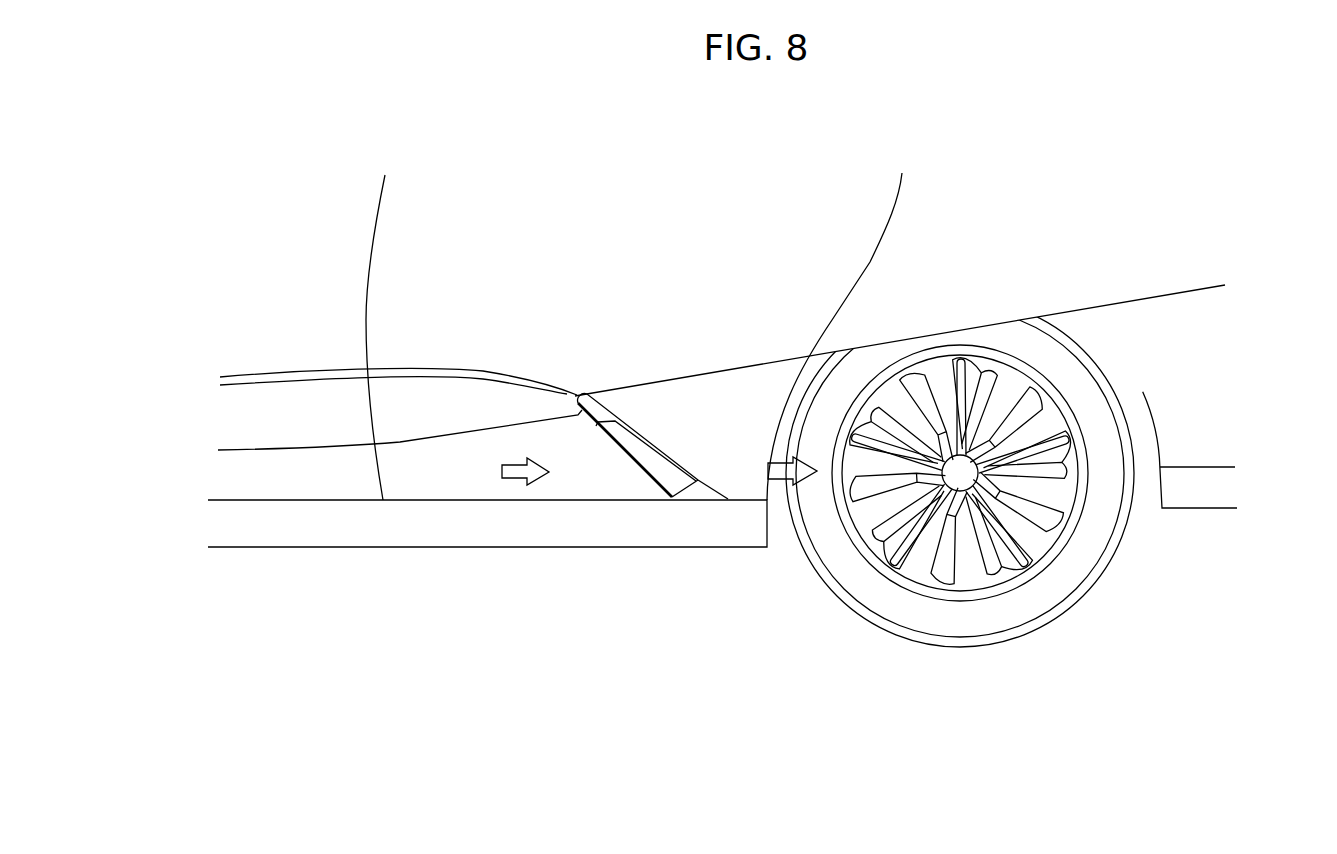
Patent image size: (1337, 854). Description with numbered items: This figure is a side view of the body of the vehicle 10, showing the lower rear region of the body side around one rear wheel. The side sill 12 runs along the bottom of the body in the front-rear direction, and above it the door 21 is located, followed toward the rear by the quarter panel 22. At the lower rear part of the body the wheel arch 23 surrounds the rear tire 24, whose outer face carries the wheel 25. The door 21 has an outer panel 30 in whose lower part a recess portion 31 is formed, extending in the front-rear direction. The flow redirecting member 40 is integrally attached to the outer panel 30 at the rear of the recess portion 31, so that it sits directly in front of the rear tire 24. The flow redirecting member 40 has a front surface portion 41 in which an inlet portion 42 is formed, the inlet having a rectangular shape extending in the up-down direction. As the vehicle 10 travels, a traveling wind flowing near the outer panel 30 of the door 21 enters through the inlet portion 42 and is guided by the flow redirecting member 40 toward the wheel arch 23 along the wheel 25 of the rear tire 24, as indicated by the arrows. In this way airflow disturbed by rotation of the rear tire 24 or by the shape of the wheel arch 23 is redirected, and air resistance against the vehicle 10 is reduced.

The vehicle 10 is at (312, 148).
The side sill 12 is at (525, 528).
The door 21 is at (515, 233).
The quarter panel 22 is at (974, 248).
The wheel arch 23 is at (1146, 392).
The rear tire 24 is at (1038, 638).
The wheel 25 is at (922, 573).
The outer panel 30 is at (616, 228).
The recess portion 31 is at (425, 473).
The flow redirecting member 40 is at (660, 517).
The front surface portion 41 is at (702, 490).
The inlet portion 42 is at (645, 455).